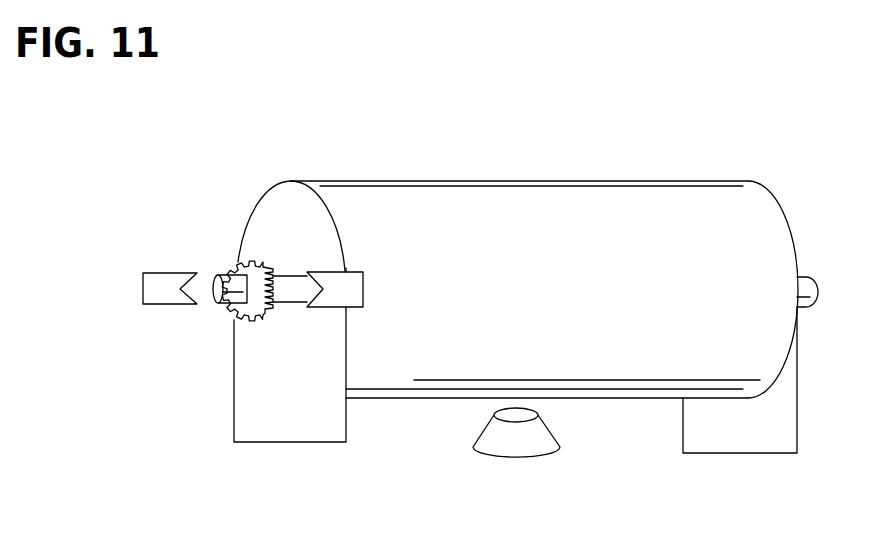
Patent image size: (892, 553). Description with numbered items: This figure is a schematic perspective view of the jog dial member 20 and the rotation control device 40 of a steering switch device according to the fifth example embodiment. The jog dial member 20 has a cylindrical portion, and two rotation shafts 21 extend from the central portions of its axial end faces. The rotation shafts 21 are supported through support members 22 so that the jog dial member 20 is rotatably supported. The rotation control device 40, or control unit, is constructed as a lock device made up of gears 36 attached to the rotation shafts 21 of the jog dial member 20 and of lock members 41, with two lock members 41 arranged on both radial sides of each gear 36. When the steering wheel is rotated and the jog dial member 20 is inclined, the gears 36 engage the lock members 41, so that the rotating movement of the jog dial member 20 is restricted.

The jog dial member 20 is at (392, 181).
The rotation shafts 21 is at (214, 296).
The support members 22 is at (288, 430).
The gears 36 is at (246, 262).
The rotation control device 40 is at (273, 232).
The lock members 41 is at (210, 209).